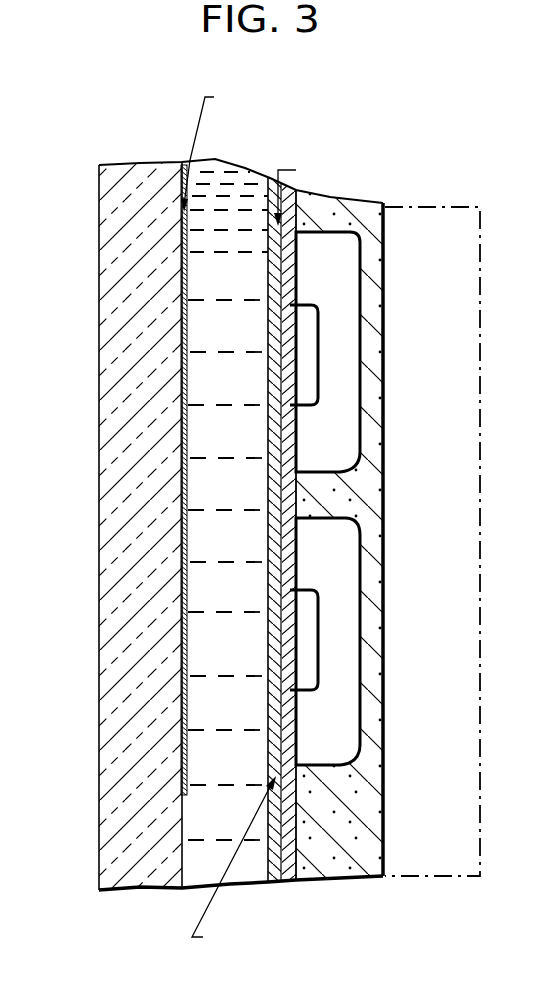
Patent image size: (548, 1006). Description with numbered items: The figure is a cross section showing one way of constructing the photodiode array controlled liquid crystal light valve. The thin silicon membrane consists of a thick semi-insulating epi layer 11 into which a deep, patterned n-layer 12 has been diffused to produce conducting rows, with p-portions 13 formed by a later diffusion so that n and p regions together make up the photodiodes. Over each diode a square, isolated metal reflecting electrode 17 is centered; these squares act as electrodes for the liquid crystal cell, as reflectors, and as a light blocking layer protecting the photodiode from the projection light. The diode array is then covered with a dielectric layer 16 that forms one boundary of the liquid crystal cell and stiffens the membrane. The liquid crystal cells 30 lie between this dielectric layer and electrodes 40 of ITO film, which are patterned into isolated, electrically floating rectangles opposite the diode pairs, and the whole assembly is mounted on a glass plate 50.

The semi-insulating epi layer 11 is at (424, 813).
The n-layer 12 is at (385, 492).
The p-portions 13 is at (310, 380).
The dielectric layer 16 is at (268, 350).
The metal reflecting electrodes 17 is at (266, 448).
The liquid crystal cells 30 is at (233, 631).
The electrodes 40 is at (188, 740).
The glass plate 50 is at (122, 370).